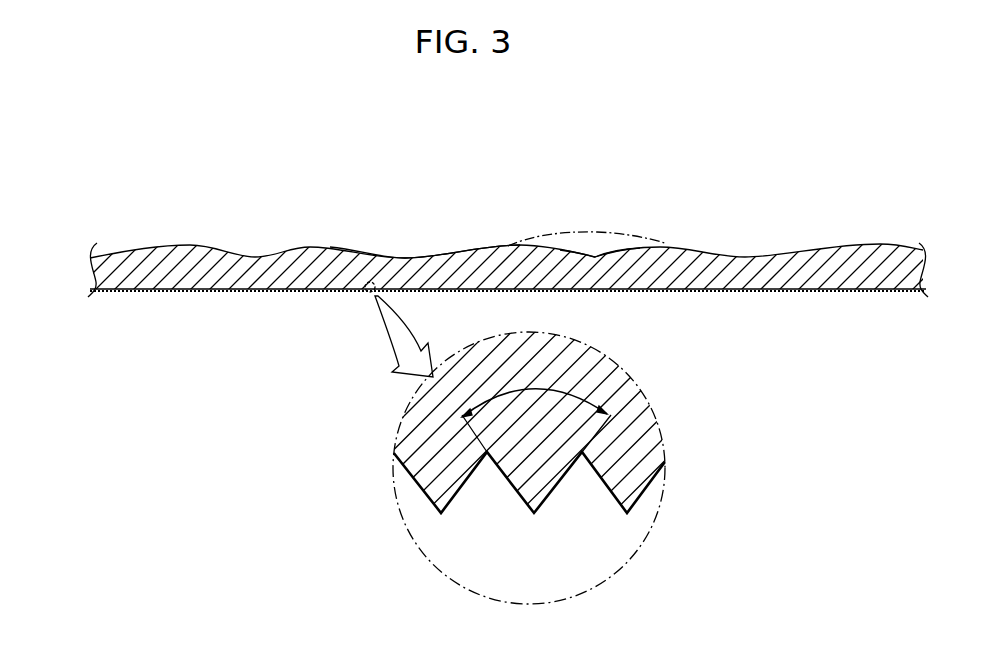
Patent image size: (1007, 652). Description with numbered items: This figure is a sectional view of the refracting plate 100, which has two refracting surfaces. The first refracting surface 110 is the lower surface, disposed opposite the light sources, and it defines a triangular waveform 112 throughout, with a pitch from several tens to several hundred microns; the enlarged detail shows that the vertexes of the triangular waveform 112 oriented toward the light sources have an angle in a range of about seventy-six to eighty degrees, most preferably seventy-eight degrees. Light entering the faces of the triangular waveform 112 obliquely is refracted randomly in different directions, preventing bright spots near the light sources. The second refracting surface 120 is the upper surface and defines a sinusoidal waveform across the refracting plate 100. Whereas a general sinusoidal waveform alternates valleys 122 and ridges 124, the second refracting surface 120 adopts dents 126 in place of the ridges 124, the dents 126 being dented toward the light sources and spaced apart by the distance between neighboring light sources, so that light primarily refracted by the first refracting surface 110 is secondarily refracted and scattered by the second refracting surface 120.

The refracting plate 100 is at (342, 130).
The first refracting surface 110 is at (122, 297).
The triangular waveform 112 is at (517, 488).
The second refracting surface 120 is at (121, 240).
The valleys 122 is at (427, 257).
The ridges 124 is at (597, 232).
The dents 126 is at (597, 248).